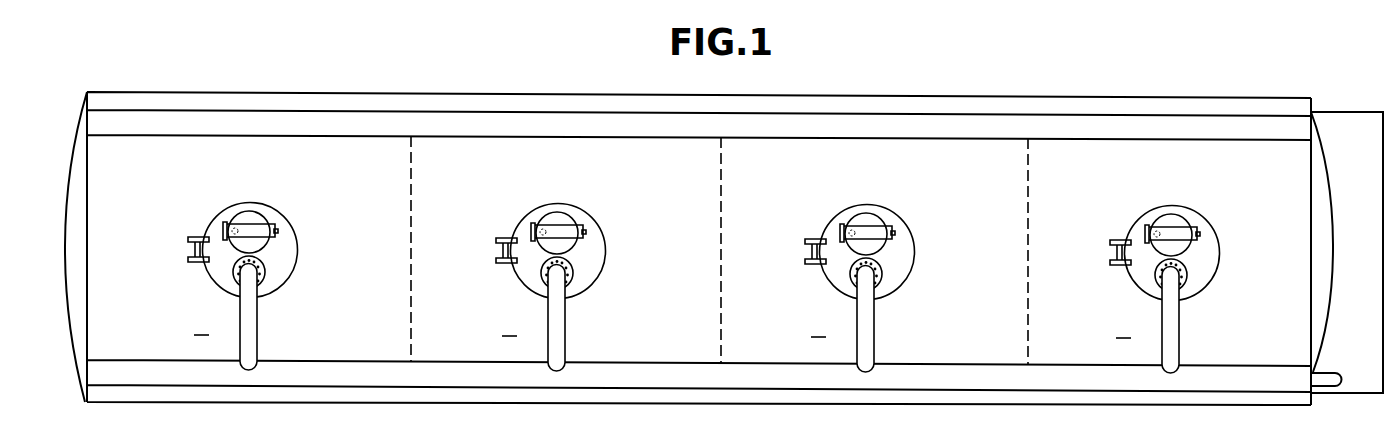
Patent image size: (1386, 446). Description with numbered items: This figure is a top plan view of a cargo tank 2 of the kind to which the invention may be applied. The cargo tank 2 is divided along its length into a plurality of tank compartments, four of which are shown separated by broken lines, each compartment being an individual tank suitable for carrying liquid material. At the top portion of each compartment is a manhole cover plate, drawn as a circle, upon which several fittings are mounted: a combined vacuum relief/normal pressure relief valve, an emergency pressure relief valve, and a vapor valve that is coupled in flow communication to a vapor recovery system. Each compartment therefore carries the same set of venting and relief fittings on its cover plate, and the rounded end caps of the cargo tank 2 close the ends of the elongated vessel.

The cargo tank 2 is at (1322, 198).